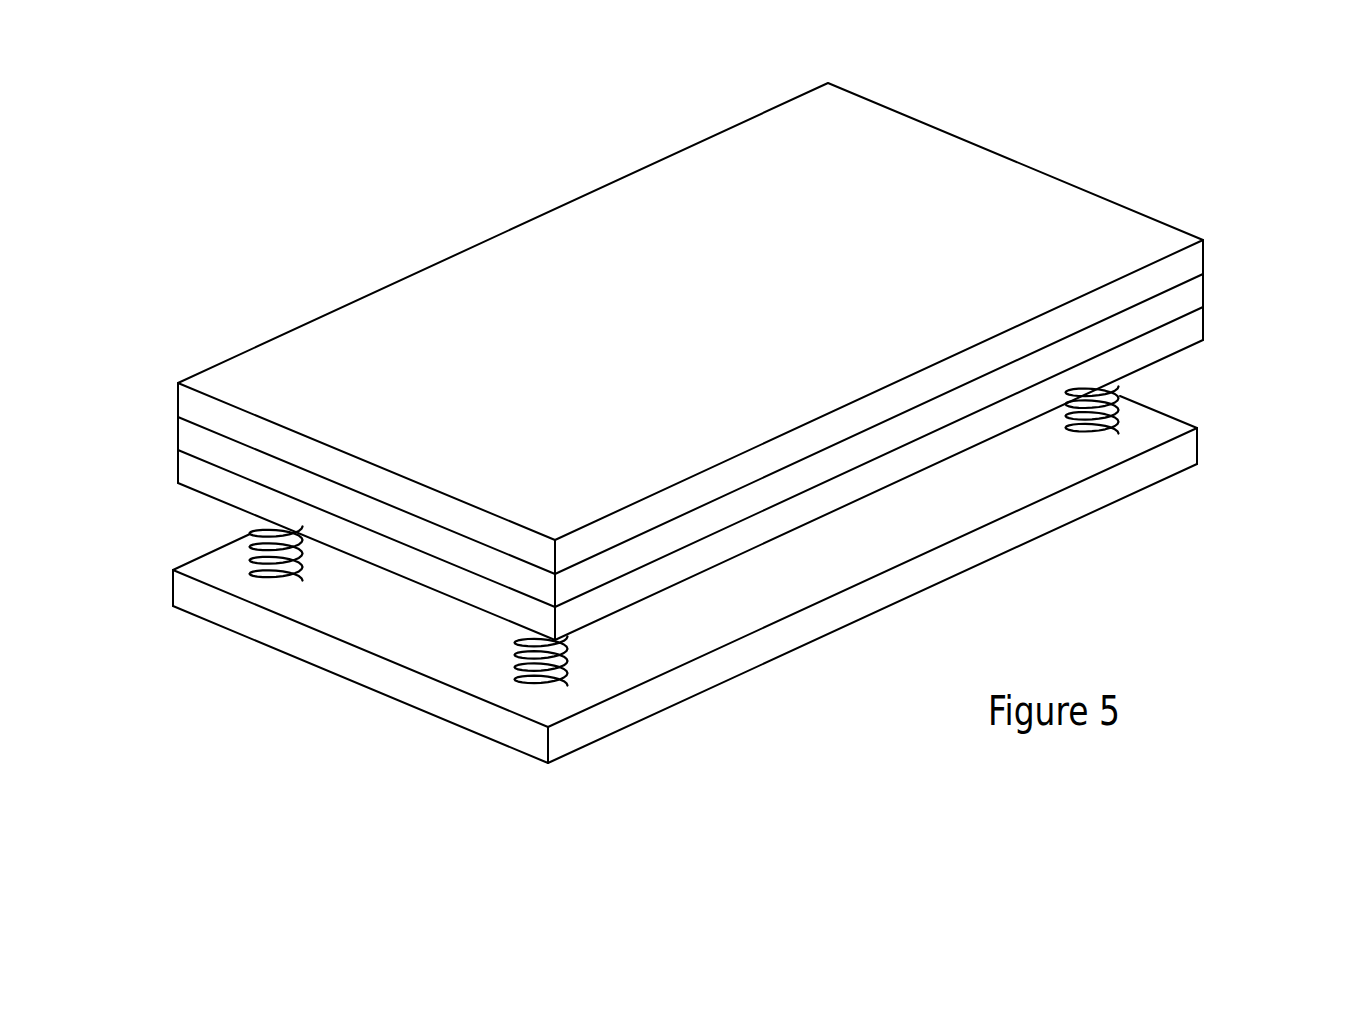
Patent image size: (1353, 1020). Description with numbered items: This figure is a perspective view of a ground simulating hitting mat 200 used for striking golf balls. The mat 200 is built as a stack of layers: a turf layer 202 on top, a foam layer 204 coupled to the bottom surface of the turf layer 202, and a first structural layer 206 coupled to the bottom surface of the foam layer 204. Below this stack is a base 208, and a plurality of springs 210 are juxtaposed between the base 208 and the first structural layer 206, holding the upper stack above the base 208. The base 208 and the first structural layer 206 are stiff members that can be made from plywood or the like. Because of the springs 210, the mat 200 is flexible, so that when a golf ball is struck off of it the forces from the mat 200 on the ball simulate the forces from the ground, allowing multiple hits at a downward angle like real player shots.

The hitting mat 200 is at (442, 196).
The turf layer 202 is at (1195, 257).
The foam layer 204 is at (1195, 296).
The first structural layer 206 is at (1190, 332).
The base 208 is at (1183, 457).
The springs 210 is at (250, 534).